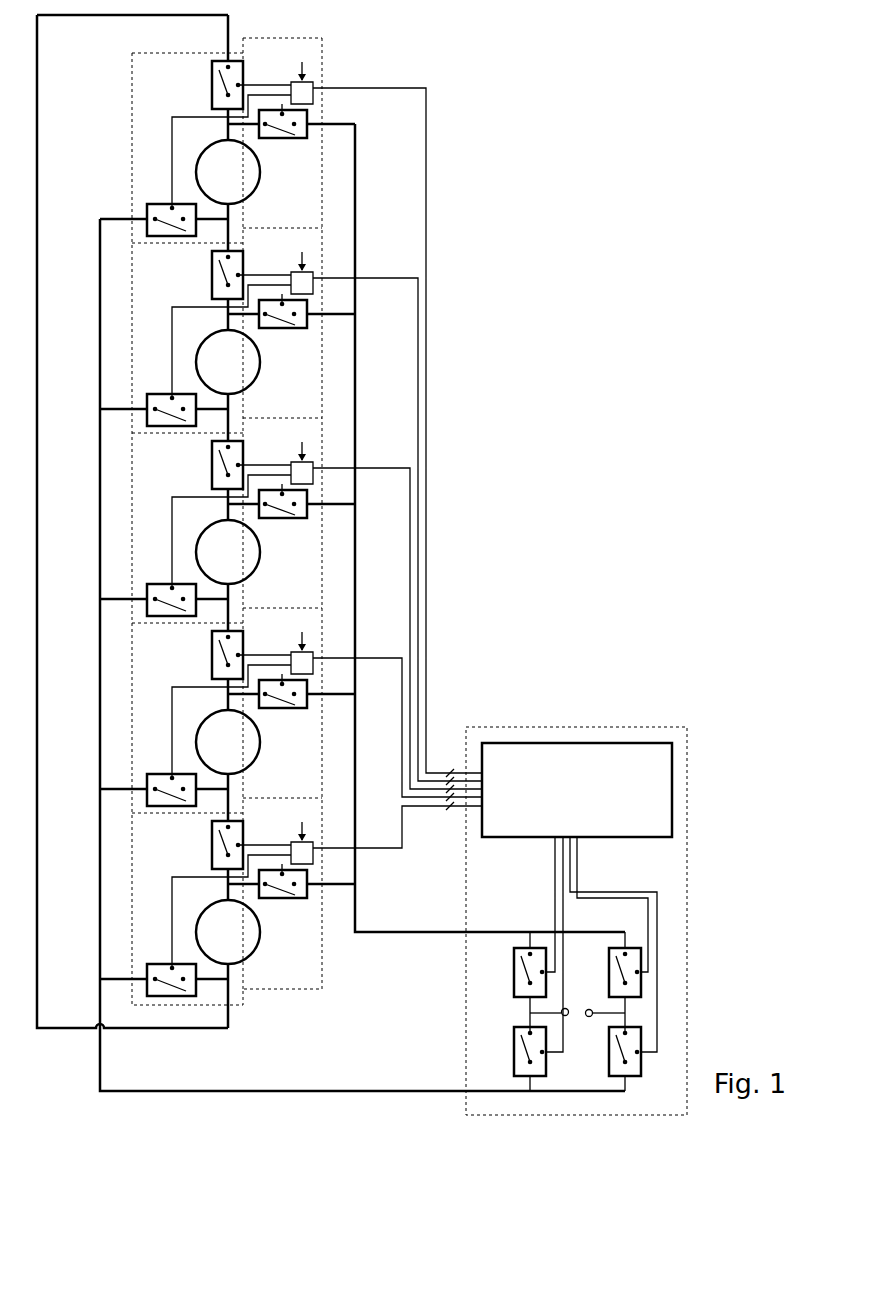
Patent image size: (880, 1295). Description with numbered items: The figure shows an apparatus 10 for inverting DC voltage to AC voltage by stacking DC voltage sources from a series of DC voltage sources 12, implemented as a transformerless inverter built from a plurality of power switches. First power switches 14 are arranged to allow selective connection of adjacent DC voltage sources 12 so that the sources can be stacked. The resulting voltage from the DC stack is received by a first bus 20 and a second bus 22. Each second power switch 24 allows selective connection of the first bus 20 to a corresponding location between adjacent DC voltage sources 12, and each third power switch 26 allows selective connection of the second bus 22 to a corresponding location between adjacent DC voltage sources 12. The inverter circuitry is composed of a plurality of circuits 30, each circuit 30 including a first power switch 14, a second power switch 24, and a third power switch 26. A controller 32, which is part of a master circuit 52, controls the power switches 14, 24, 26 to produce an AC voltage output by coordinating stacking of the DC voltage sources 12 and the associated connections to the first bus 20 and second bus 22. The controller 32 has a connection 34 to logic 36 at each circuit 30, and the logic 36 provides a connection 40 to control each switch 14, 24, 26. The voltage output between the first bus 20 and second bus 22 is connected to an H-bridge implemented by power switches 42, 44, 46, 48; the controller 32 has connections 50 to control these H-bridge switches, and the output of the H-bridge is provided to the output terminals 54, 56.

The apparatus 10 is at (472, 147).
The DC voltage source 12 is at (261, 178).
The first power switch 14 is at (210, 86).
The first bus 20 is at (100, 250).
The second bus 22 is at (357, 197).
The second power switch 24 is at (161, 205).
The third power switch 26 is at (283, 139).
The circuit 30 is at (132, 124).
The controller 32 is at (619, 742).
The connection 34 is at (417, 363).
The logic 36 is at (313, 82).
The connection 40 is at (282, 82).
The power switch 42 is at (512, 969).
The power switch 44 is at (512, 1047).
The power switch 46 is at (609, 969).
The power switch 48 is at (608, 1050).
The connection 50 is at (578, 873).
The master circuit 52 is at (530, 727).
The output terminal 54 is at (565, 1008).
The output terminal 56 is at (590, 1017).